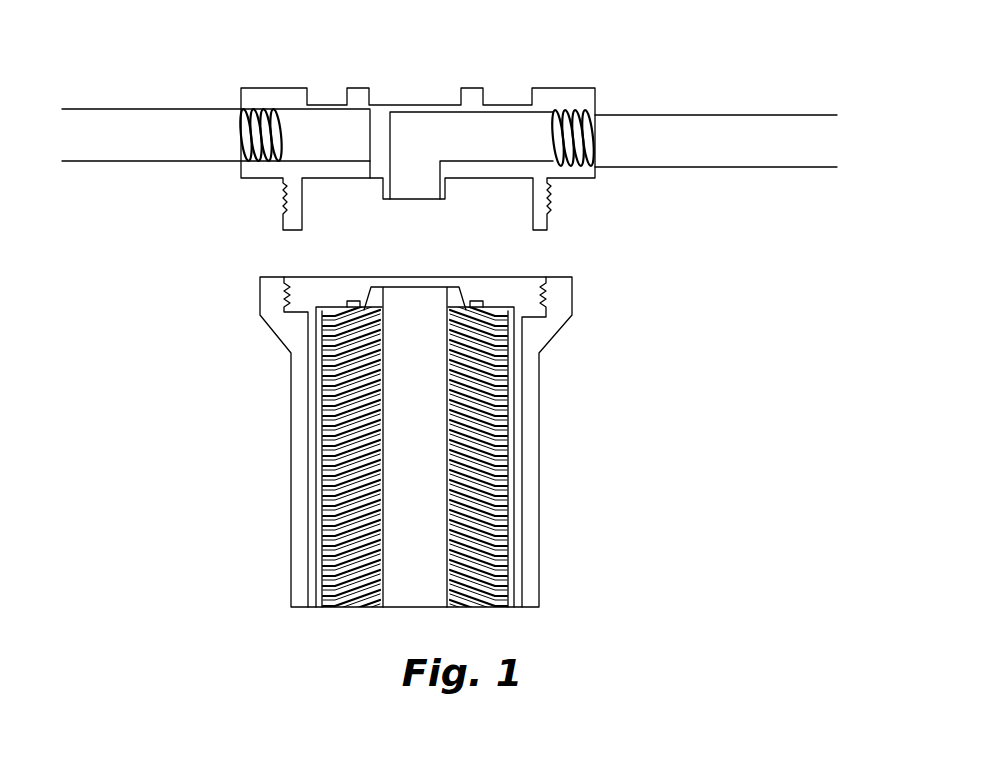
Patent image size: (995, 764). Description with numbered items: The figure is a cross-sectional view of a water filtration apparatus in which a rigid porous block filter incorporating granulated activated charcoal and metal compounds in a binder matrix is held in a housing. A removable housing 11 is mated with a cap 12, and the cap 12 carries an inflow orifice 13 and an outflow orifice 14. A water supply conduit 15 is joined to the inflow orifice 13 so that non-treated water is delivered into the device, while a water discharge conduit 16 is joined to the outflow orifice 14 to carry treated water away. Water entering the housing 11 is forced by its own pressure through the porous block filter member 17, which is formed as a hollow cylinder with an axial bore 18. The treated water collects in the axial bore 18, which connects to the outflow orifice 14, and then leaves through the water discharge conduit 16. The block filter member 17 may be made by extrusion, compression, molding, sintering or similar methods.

The removable housing 11 is at (537, 493).
The cap 12 is at (404, 106).
The inflow orifice 13 is at (267, 108).
The outflow orifice 14 is at (565, 108).
The water supply conduit 15 is at (150, 107).
The water discharge conduit 16 is at (722, 113).
The porous block filter member 17 is at (324, 452).
The axial bore 18 is at (425, 397).